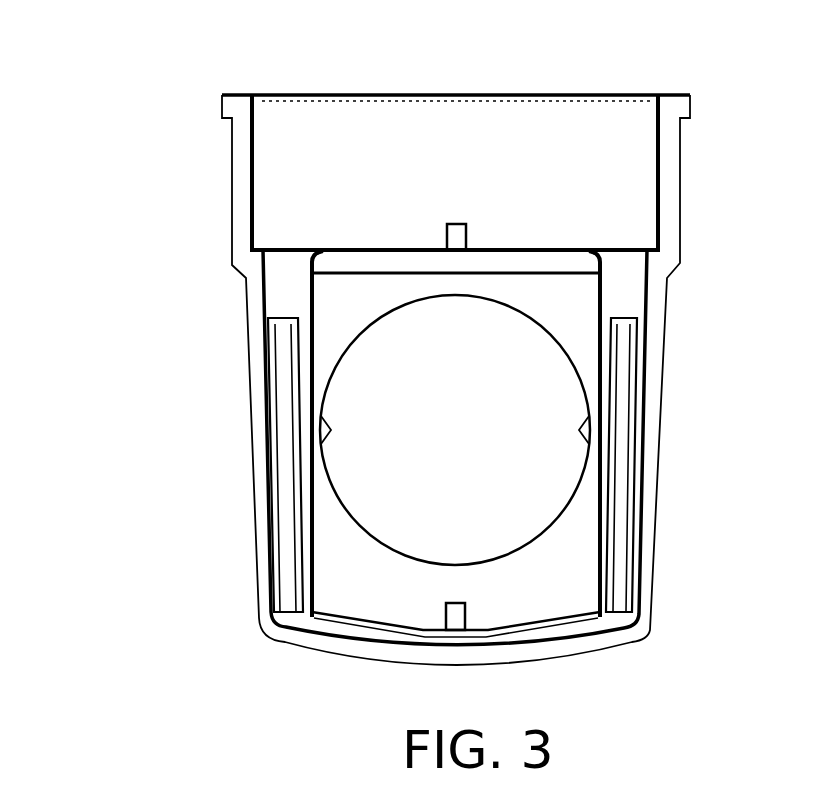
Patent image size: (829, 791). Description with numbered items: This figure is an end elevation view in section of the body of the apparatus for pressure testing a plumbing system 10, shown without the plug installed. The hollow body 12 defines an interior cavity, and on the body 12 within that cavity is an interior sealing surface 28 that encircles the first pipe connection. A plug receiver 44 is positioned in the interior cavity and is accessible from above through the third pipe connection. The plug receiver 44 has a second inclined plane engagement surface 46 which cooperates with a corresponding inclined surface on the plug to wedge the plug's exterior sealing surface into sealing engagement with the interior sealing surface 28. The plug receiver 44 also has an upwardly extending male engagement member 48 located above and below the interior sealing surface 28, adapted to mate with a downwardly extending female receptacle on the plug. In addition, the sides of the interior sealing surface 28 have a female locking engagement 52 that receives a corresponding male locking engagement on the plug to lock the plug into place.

The apparatus for pressure testing a plumbing system 10 is at (376, 384).
The hollow body 12 is at (231, 224).
The interior sealing surface 28 is at (360, 290).
The plug receiver 44 is at (283, 315).
The second inclined plane engagement surface 46 is at (283, 432).
The male engagement member 48 is at (468, 240).
The female locking engagement 52 is at (578, 432).